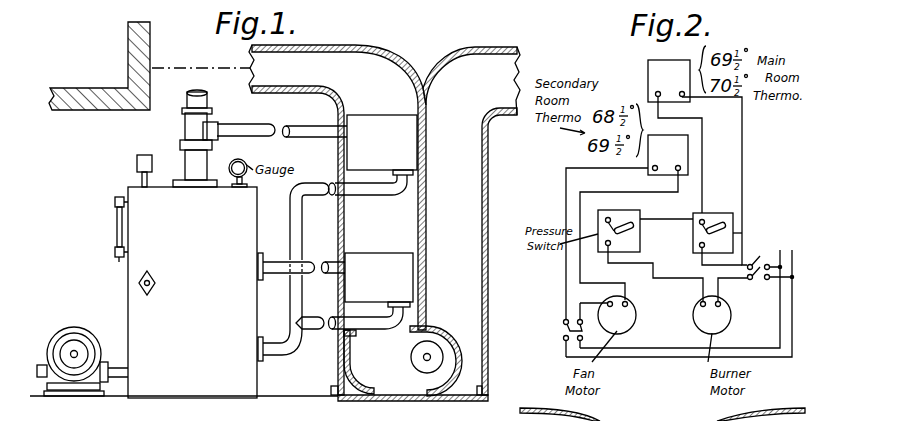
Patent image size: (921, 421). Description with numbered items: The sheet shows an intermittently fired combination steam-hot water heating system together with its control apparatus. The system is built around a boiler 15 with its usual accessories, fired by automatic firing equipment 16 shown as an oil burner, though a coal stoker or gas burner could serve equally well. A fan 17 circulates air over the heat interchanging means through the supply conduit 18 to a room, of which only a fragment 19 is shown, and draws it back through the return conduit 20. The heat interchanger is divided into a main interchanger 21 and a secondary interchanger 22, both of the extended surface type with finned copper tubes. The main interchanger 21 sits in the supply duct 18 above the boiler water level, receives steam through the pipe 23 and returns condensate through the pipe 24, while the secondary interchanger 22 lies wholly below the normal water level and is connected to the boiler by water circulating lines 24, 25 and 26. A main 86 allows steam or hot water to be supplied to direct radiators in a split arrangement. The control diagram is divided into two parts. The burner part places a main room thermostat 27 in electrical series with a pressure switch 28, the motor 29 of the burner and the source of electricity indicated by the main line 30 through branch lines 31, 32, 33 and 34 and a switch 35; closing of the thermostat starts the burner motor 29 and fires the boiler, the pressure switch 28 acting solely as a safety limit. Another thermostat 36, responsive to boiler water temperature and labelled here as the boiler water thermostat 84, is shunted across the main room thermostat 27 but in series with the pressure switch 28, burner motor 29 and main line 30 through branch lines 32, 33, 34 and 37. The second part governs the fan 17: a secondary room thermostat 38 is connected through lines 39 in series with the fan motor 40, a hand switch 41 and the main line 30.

In FIG. 1, the boiler 15 is at (186, 292).
In FIG. 1, the automatic firing equipment 16 is at (90, 323).
In FIG. 1, the fan 17 is at (431, 331).
In FIG. 1, the supply conduit 18 is at (278, 86).
In FIG. 1, the room 19 is at (80, 88).
In FIG. 1, the return conduit 20 is at (471, 221).
In FIG. 1, the main interchanger 21 is at (382, 145).
In FIG. 1, the secondary interchanger 22 is at (379, 280).
In FIG. 1, the pipe 23 is at (308, 141).
In FIG. 1, the pipe 24 is at (328, 185).
In FIG. 1, the water circulating line 25 is at (352, 322).
In FIG. 1, the water circulating line 26 is at (332, 258).
In FIG. 2, the main room thermostat 27 is at (669, 81).
In FIG. 1, the pressure switch 28 is at (137, 162).
In FIG. 2, the pressure switch 28 is at (640, 245).
In FIG. 2, the burner motor 29 is at (712, 315).
In FIG. 2, the main line 30 is at (797, 250).
In FIG. 2, the branch line 31 is at (742, 138).
In FIG. 2, the branch line 32 is at (676, 213).
In FIG. 2, the branch line 33 is at (688, 279).
In FIG. 2, the branch line 34 is at (722, 279).
In FIG. 2, the switch 35 is at (771, 258).
In FIG. 1, the boiler water thermostat 36 is at (153, 291).
In FIG. 2, the boiler water thermostat 36 is at (715, 213).
In FIG. 2, the branch line 37 is at (698, 262).
In FIG. 2, the secondary room thermostat 38 is at (668, 155).
In FIG. 2, the lines 39 is at (614, 192).
In FIG. 2, the fan motor 40 is at (617, 315).
In FIG. 2, the hand switch 41 is at (563, 322).
In FIG. 2, the boiler water thermostat 84 is at (773, 212).
In FIG. 1, the main 86 is at (186, 99).